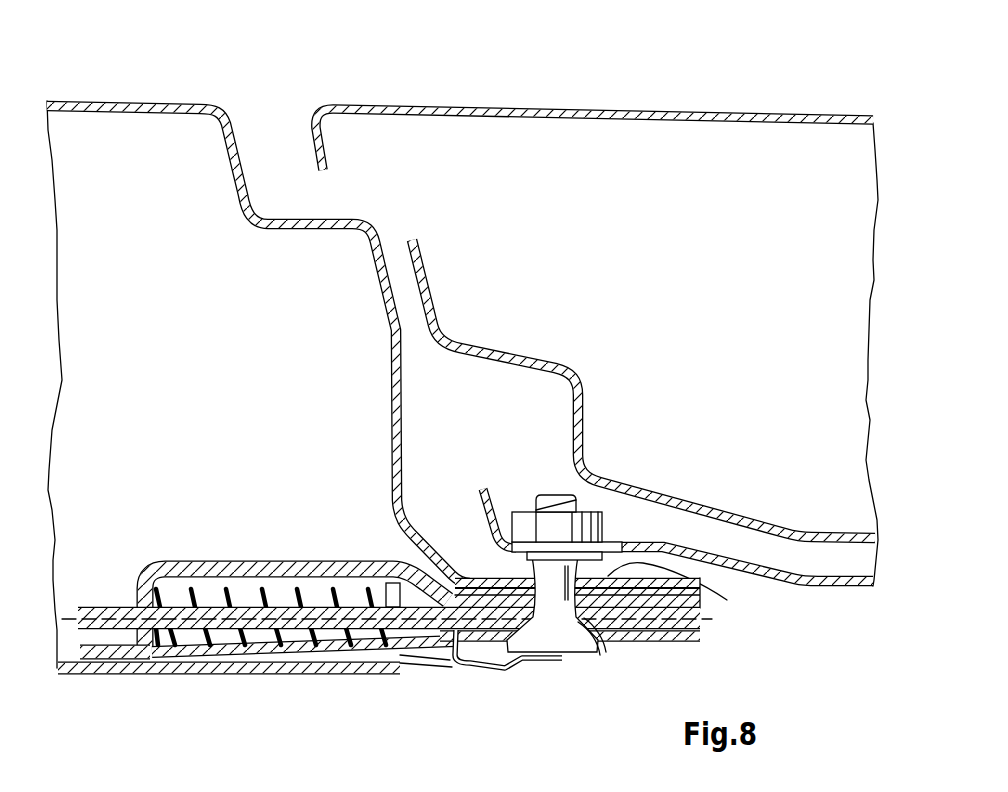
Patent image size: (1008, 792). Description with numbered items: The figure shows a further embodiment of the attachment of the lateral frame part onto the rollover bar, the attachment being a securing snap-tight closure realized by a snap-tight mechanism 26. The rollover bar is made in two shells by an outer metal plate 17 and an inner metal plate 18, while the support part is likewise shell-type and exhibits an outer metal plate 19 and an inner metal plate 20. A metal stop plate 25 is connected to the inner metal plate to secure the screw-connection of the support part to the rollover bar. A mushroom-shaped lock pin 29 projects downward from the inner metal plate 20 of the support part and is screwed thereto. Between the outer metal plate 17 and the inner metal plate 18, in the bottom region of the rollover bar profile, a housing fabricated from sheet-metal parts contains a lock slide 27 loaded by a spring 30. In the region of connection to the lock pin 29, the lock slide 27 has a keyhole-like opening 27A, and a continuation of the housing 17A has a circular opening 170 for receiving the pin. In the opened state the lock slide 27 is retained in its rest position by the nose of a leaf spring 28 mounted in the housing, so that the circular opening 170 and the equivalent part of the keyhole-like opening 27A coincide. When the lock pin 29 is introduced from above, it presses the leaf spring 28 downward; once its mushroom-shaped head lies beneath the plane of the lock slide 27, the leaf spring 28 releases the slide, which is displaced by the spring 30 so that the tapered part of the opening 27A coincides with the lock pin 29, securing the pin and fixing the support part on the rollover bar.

The outer metal plate 17 is at (118, 101).
The outer metal plate 19 is at (527, 106).
The metal stop plate 25 is at (708, 510).
The inner metal plate 20 is at (810, 587).
The circular opening 170 is at (698, 582).
The inner metal plate 18 is at (118, 675).
The spring 30 is at (263, 588).
The lock slide 27 is at (94, 607).
The continuation of the housing 17A is at (487, 577).
The mushroom-shaped lock pin 29 is at (583, 655).
The snap-tight mechanism 26 is at (594, 660).
The keyhole-like opening 27A is at (465, 663).
The leaf spring 28 is at (500, 668).